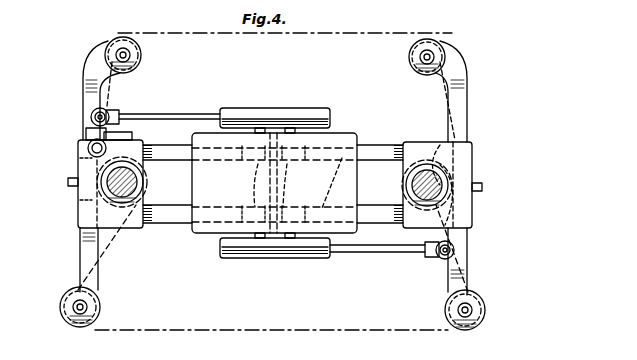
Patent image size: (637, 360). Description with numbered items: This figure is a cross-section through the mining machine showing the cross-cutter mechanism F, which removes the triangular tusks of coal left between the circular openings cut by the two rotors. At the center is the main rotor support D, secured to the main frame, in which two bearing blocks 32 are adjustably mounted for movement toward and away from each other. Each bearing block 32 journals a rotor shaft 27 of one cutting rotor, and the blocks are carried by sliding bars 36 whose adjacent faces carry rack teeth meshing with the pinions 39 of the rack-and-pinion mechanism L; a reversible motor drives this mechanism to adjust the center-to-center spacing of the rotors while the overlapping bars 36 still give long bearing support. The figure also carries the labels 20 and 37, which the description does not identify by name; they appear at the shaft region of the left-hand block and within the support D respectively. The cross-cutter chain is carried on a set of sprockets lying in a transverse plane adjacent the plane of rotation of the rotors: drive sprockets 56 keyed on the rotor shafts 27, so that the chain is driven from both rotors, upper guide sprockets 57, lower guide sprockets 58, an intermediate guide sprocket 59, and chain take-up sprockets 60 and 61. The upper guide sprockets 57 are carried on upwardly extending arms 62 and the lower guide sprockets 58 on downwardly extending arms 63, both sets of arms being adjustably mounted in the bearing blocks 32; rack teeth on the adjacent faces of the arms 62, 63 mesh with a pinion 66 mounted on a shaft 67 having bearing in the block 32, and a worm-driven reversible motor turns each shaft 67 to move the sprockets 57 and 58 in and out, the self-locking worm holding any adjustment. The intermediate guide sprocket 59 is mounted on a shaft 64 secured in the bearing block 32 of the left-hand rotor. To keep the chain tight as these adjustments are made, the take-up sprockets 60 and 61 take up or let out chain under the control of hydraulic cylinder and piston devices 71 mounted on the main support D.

The cross-cutter mechanism F is at (377, 33).
The main rotor support D is at (346, 134).
The rack-and-pinion mechanism L is at (288, 166).
The shaft 20 is at (133, 181).
The rotor shaft 27 is at (438, 174).
The bearing block 32 is at (78, 214).
The sliding bar 36 is at (164, 205).
The member 37 is at (331, 183).
The pinion 39 is at (257, 166).
The drive sprocket 56 is at (458, 136).
The upper guide sprocket 57 is at (142, 57).
The lower guide sprocket 58 is at (102, 303).
The intermediate guide sprocket 59 is at (118, 144).
The chain take-up sprocket 60 is at (97, 109).
The chain take-up sprocket 61 is at (455, 254).
The upwardly extending arm 62 is at (83, 68).
The downwardly extending arm 63 is at (81, 252).
The shaft 64 is at (93, 140).
The pinion 66 is at (80, 160).
The shaft 67 is at (68, 182).
The hydraulic cylinder and piston device 71 is at (278, 108).